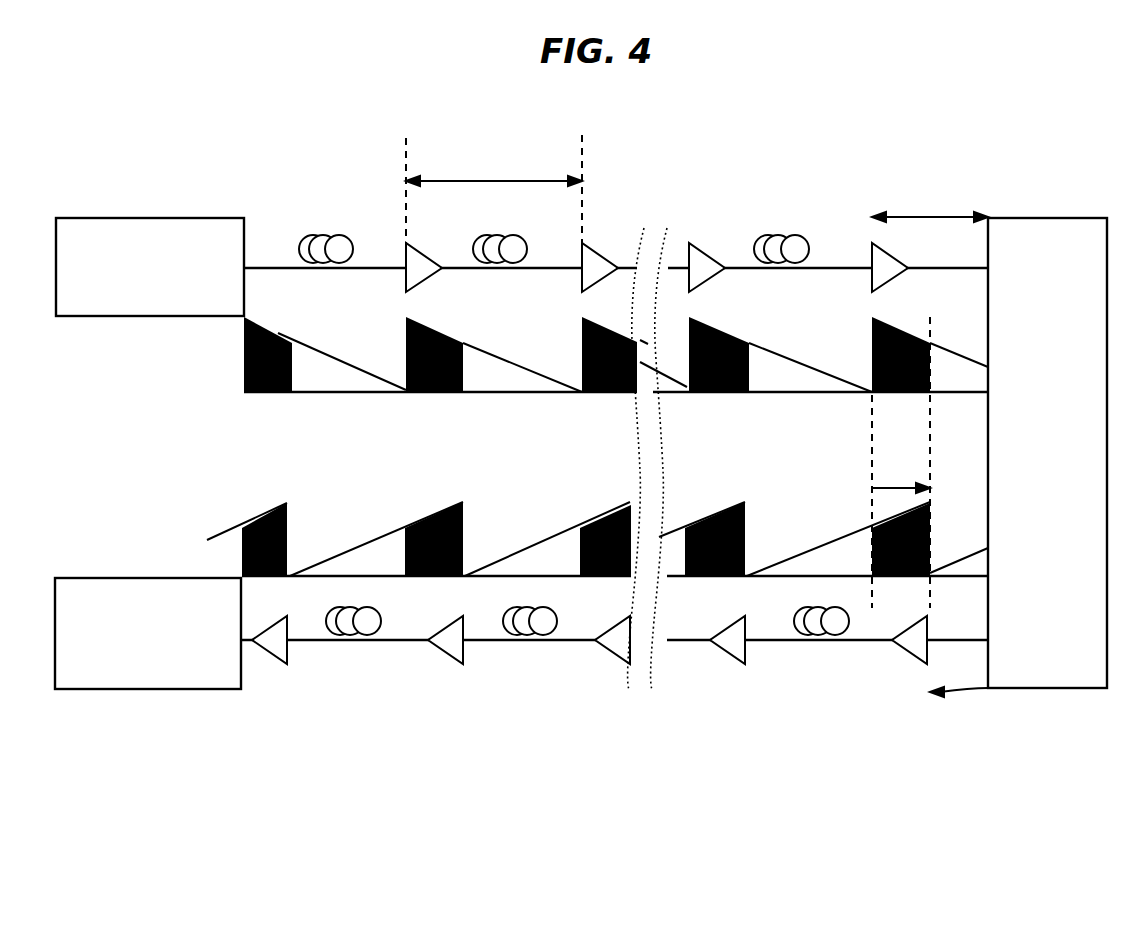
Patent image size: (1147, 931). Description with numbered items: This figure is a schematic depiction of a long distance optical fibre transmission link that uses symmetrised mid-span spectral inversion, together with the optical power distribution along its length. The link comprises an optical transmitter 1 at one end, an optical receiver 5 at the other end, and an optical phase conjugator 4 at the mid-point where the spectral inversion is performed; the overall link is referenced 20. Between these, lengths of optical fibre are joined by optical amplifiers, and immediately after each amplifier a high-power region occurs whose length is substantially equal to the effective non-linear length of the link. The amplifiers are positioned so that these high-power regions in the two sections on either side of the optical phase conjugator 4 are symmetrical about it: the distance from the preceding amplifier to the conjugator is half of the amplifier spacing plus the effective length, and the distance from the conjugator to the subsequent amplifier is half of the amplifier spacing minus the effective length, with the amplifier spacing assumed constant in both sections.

The optical transmitter 1 is at (87, 228).
The optical phase conjugator 4 is at (1078, 630).
The optical receiver 5 is at (127, 645).
The optical transmission link 20 is at (368, 722).